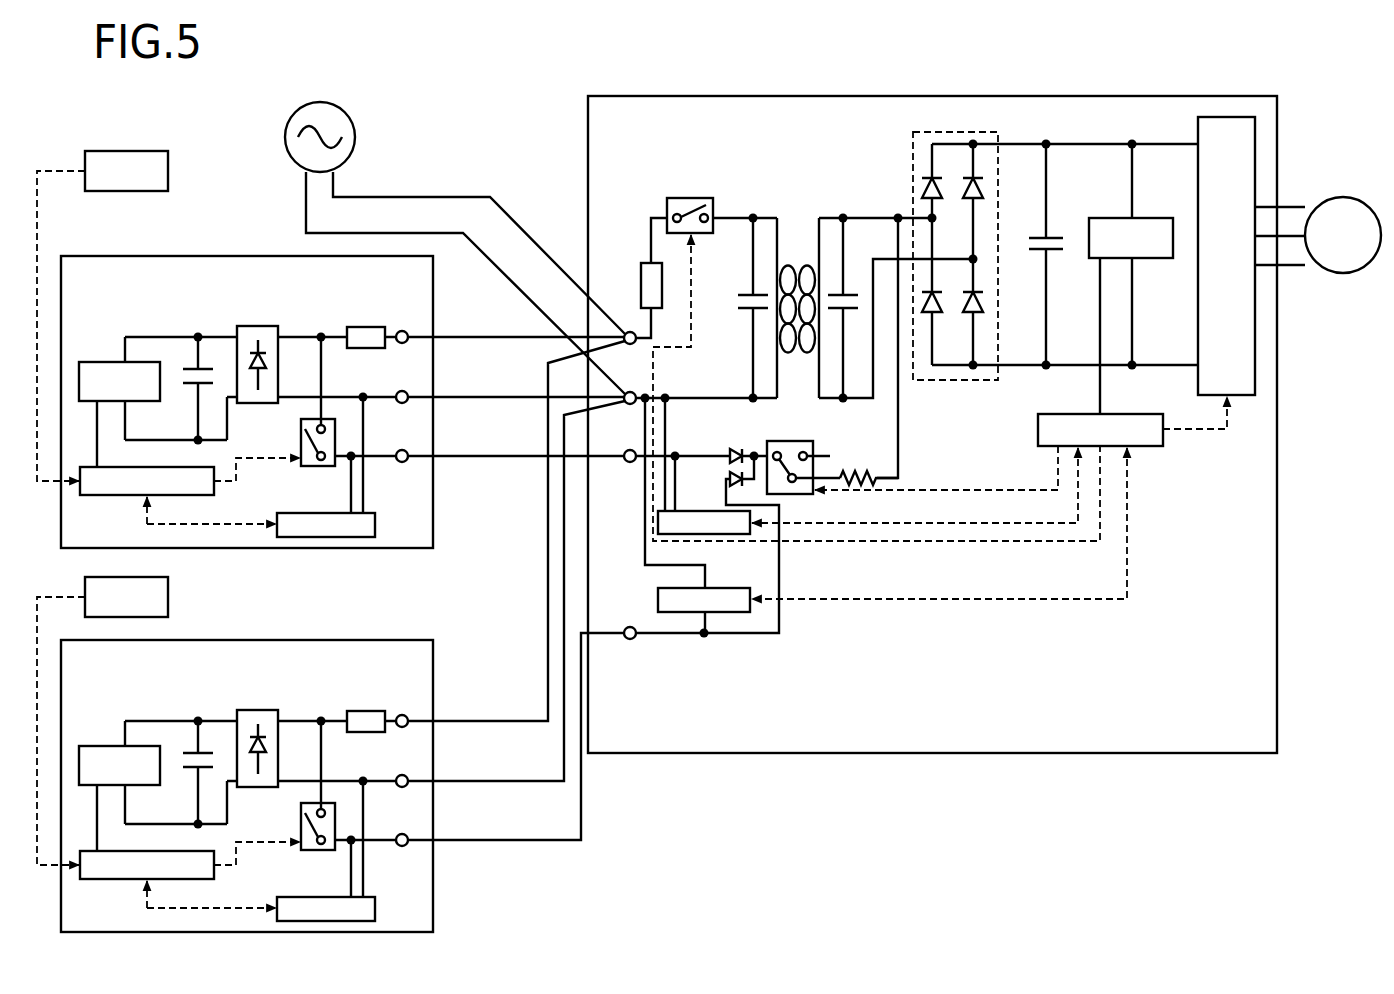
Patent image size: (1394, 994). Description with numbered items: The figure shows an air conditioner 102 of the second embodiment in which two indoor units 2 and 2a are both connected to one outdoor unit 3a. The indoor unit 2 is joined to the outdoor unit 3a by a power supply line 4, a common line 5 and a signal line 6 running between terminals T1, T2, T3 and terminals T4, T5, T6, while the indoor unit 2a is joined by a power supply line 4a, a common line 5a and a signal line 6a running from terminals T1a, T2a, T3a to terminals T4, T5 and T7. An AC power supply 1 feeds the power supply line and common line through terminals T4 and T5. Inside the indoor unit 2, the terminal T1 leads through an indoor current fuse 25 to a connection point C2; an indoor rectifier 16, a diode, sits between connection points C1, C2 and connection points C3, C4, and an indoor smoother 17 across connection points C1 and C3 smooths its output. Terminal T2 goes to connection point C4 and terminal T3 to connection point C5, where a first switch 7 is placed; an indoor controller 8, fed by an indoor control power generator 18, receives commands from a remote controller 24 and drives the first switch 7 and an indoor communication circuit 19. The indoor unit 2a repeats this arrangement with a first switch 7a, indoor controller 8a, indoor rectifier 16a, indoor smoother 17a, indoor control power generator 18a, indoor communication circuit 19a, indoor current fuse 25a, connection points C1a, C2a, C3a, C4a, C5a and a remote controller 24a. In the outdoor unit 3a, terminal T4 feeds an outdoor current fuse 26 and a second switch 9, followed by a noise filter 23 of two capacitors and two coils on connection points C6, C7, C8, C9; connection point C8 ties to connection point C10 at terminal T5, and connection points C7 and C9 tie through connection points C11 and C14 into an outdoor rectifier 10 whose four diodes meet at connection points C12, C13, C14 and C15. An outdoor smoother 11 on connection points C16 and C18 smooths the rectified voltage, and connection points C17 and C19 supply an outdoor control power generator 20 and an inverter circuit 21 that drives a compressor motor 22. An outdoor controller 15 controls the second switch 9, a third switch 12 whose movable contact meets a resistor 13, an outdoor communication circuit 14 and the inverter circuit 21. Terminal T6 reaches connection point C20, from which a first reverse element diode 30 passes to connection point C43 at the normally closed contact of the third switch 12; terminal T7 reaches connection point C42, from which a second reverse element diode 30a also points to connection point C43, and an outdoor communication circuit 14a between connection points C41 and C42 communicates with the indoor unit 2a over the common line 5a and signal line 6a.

The AC power supply 1 is at (319, 102).
The indoor unit 2 is at (214, 256).
The indoor unit 2a is at (281, 640).
The outdoor unit 3a is at (753, 96).
The power supply line 4 is at (466, 337).
The common line 5 is at (466, 397).
The signal line 6 is at (466, 456).
The power supply line 4a is at (468, 721).
The common line 5a is at (468, 781).
The signal line 6a is at (468, 840).
The first switch 7 is at (301, 434).
The first switch 7a is at (301, 818).
The indoor controller 8 is at (103, 495).
The indoor controller 8a is at (103, 879).
The second switch 9 is at (685, 198).
The outdoor rectifier 10 is at (913, 153).
The outdoor smoother 11 is at (1040, 238).
The third switch 12 is at (801, 441).
The resistor 13 is at (857, 471).
The outdoor communication circuit 14 is at (658, 521).
The outdoor communication circuit 14a is at (658, 596).
The outdoor controller 15 is at (1038, 427).
The indoor rectifier 16 is at (258, 326).
The indoor rectifier 16a is at (258, 710).
The indoor smoother 17 is at (195, 389).
The indoor smoother 17a is at (195, 773).
The indoor control power generator 18 is at (98, 362).
The indoor control power generator 18a is at (98, 746).
The indoor communication circuit 19 is at (291, 513).
The indoor communication circuit 19a is at (291, 897).
The outdoor control power generator 20 is at (1112, 218).
The inverter circuit 21 is at (1245, 396).
The compressor motor 22 is at (1343, 197).
The noise filter 23 is at (830, 237).
The remote controller 24 is at (168, 171).
The remote controller 24a is at (168, 597).
The indoor current fuse 25 is at (365, 327).
The indoor current fuse 25a is at (365, 711).
The outdoor current fuse 26 is at (651, 263).
The first reverse element diode 30 is at (734, 449).
The second reverse element diode 30a is at (728, 478).
The air conditioner 102 is at (839, 61).
The connection point C1 is at (198, 332).
The connection point C2 is at (321, 332).
The connection point C3 is at (196, 444).
The connection point C4 is at (363, 392).
The connection point C5 is at (351, 456).
The connection point C1a is at (198, 716).
The connection point C2a is at (321, 716).
The connection point C3a is at (196, 828).
The connection point C4a is at (363, 776).
The connection point C5a is at (351, 840).
The connection point C6 is at (753, 213).
The connection point C7 is at (843, 213).
The connection point C8 is at (753, 398).
The connection point C9 is at (843, 398).
The connection point C10 is at (665, 393).
The connection point C11 is at (898, 213).
The connection point C12 is at (932, 217).
The connection point C13 is at (973, 144).
The connection point C14 is at (973, 259).
The connection point C15 is at (973, 370).
The connection point C16 is at (1046, 144).
The connection point C17 is at (1132, 144).
The connection point C18 is at (1046, 365).
The connection point C19 is at (1132, 365).
The connection point C20 is at (675, 453).
The connection point C41 is at (645, 405).
The connection point C42 is at (704, 640).
The connection point C43 is at (754, 452).
The terminal T1 is at (402, 331).
The terminal T2 is at (402, 391).
The terminal T3 is at (402, 450).
The terminal T1a is at (402, 715).
The terminal T2a is at (402, 775).
The terminal T3a is at (402, 834).
The terminal T4 is at (630, 332).
The terminal T5 is at (630, 392).
The terminal T6 is at (630, 462).
The terminal T7 is at (630, 639).